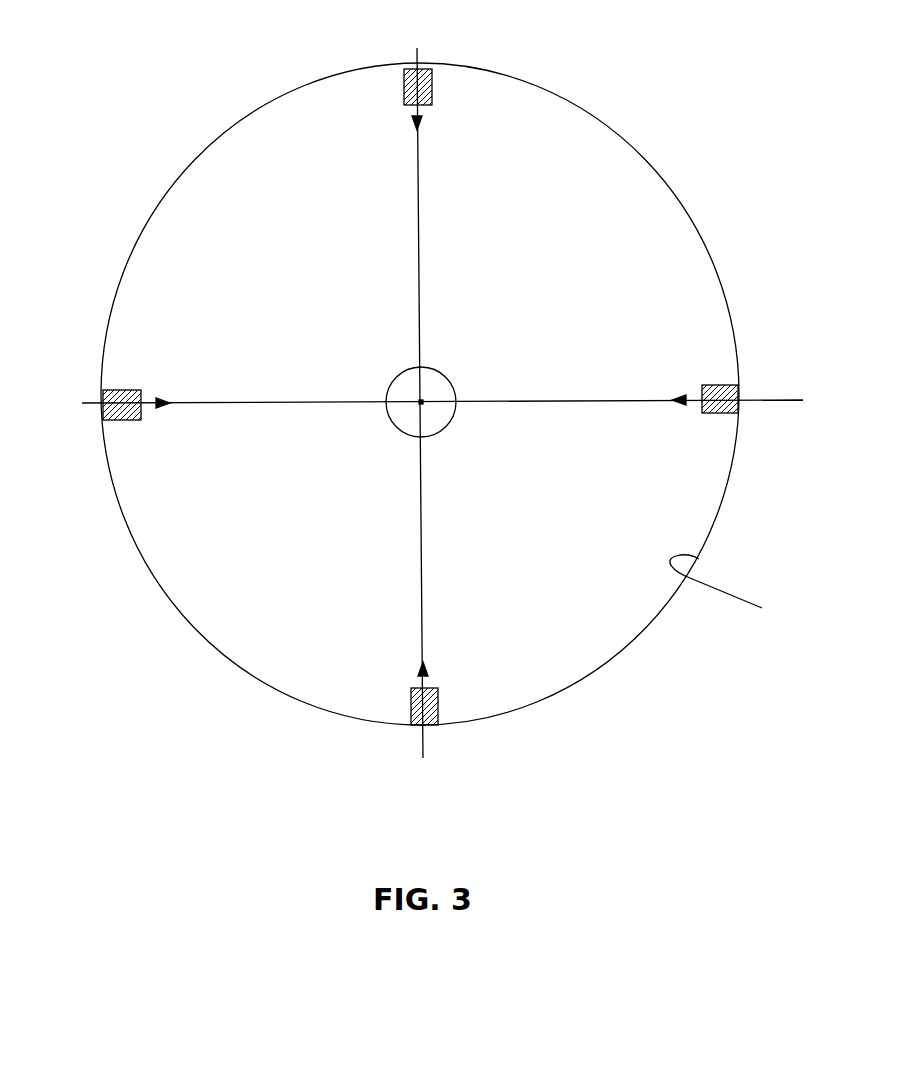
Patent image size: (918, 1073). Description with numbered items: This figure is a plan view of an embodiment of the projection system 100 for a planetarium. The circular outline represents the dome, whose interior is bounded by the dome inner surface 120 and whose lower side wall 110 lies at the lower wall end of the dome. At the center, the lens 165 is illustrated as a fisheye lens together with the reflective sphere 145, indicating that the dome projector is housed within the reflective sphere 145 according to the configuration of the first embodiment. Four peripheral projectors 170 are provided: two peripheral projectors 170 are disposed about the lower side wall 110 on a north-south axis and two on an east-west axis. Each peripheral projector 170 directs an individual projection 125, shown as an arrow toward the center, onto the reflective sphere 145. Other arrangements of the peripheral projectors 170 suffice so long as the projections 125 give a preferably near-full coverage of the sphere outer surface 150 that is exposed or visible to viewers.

The projection system 100 is at (217, 790).
The lower side wall 110 is at (662, 612).
The dome inner surface 120 is at (738, 588).
The projected image 125 is at (420, 120).
The reflective sphere 145 is at (410, 377).
The sphere outer surface 150 is at (445, 368).
The lens 165 is at (425, 401).
The peripheral projector 170 is at (430, 82).